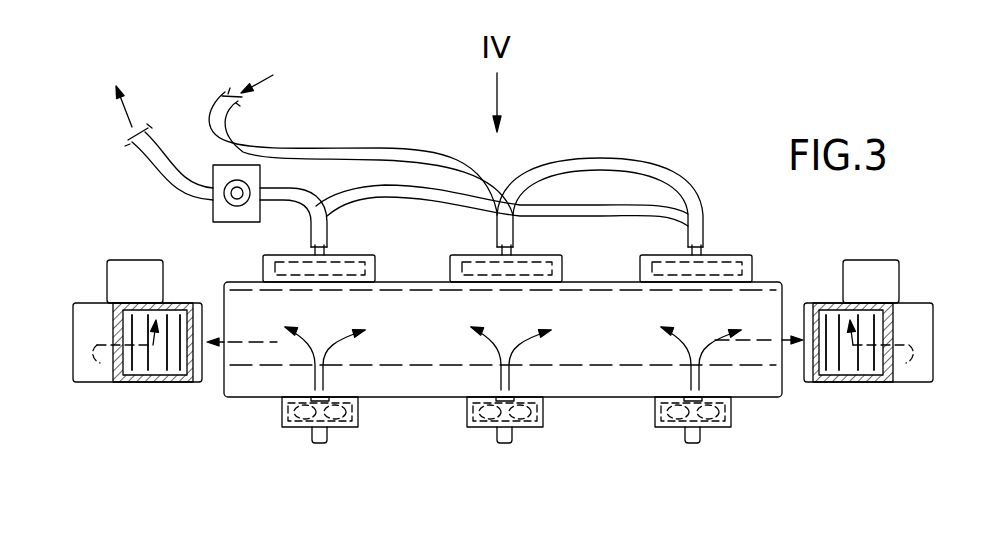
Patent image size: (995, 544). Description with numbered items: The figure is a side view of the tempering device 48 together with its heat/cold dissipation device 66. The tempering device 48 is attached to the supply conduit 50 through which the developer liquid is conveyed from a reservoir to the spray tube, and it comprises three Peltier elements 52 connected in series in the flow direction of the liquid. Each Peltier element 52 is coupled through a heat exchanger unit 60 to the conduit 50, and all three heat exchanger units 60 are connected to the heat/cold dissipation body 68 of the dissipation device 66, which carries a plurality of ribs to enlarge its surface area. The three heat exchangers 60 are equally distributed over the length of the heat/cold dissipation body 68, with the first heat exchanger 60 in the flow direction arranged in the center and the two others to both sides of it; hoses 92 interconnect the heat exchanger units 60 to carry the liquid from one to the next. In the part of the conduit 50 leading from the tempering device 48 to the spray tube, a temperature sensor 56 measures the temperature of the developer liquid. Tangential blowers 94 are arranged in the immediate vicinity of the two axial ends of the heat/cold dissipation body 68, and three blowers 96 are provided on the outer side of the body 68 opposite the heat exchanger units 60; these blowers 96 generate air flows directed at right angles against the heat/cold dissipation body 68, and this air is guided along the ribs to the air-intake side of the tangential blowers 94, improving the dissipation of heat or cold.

The tempering device 48 is at (608, 258).
The supply conduit 50 is at (158, 167).
The Peltier element 52 is at (338, 265).
The temperature sensor 56 is at (218, 175).
The heat exchanger unit 60 is at (432, 262).
The heat/cold dissipation device 66 is at (429, 420).
The heat/cold dissipation body 68 is at (606, 365).
The hose 92 is at (625, 204).
The tangential blower 94 is at (160, 372).
The blower 96 is at (297, 423).